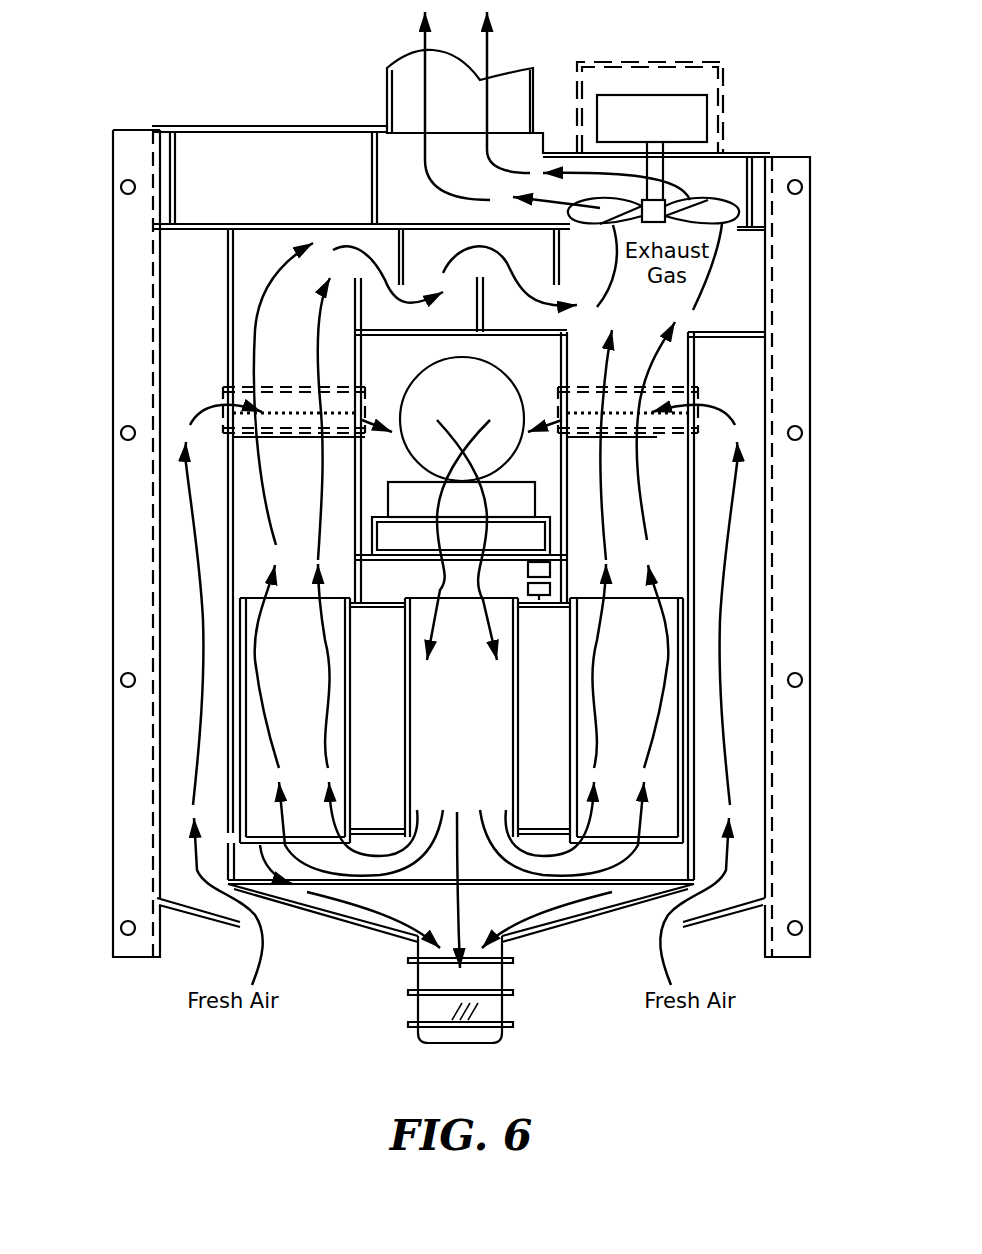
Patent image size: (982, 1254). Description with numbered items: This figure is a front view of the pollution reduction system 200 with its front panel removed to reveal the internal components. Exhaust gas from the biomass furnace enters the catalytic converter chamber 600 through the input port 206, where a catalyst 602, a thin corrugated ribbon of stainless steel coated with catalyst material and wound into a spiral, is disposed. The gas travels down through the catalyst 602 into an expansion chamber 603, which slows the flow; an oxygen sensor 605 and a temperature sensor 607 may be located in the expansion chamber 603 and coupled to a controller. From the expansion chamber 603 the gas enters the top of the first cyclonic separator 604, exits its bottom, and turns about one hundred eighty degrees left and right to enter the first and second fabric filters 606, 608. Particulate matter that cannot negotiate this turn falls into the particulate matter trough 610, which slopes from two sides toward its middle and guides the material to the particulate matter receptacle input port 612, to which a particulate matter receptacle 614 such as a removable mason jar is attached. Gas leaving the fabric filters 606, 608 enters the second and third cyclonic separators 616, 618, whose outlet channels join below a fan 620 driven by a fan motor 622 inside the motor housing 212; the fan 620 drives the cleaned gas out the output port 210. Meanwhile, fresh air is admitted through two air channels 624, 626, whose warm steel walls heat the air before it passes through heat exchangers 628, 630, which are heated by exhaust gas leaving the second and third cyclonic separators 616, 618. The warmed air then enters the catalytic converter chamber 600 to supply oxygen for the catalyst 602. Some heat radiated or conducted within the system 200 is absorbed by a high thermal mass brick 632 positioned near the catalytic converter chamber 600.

The pollution reduction system 200 is at (200, 62).
The output port 210 is at (387, 80).
The motor housing 212 is at (727, 72).
The fan motor 622 is at (700, 118).
The fan 620 is at (720, 205).
The air channel 624 is at (197, 320).
The air channel 626 is at (743, 377).
The heat exchanger 628 is at (285, 387).
The heat exchanger 630 is at (623, 390).
The catalytic converter chamber 600 is at (443, 337).
The input port 206 is at (462, 508).
The high thermal mass brick 632 is at (461, 499).
The catalyst 602 is at (461, 536).
The oxygen sensor 605 is at (538, 567).
The expansion chamber 603 is at (542, 590).
The temperature sensor 607 is at (543, 597).
The second cyclonic separator 616 is at (408, 559).
The first cyclonic separator 604 is at (461, 783).
The third cyclonic separator 618 is at (581, 599).
The first fabric filter 606 is at (247, 855).
The second fabric filter 608 is at (677, 850).
The particulate matter trough 610 is at (330, 912).
The particulate matter receptacle input port 612 is at (418, 935).
The particulate matter receptacle 614 is at (470, 1045).